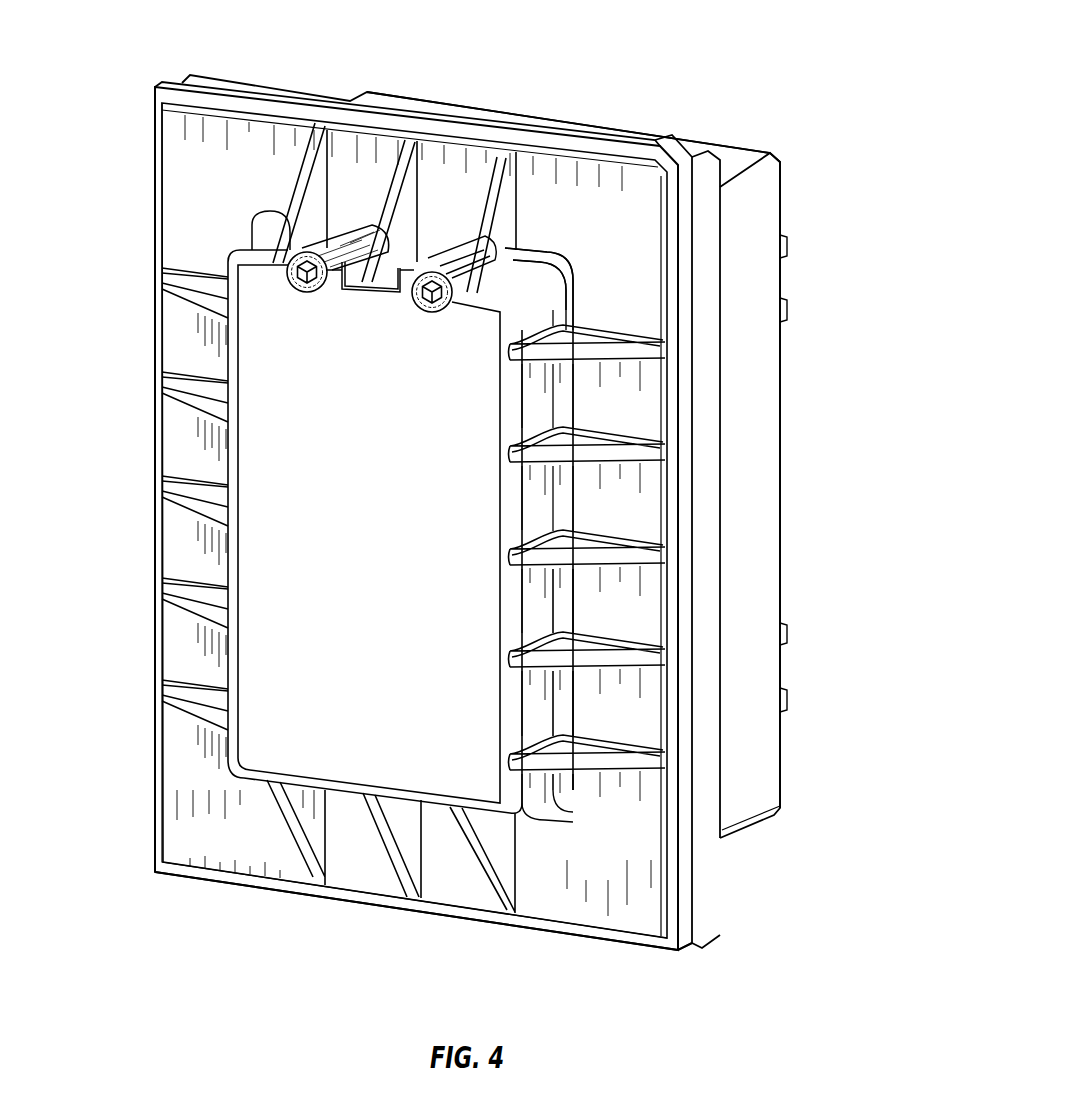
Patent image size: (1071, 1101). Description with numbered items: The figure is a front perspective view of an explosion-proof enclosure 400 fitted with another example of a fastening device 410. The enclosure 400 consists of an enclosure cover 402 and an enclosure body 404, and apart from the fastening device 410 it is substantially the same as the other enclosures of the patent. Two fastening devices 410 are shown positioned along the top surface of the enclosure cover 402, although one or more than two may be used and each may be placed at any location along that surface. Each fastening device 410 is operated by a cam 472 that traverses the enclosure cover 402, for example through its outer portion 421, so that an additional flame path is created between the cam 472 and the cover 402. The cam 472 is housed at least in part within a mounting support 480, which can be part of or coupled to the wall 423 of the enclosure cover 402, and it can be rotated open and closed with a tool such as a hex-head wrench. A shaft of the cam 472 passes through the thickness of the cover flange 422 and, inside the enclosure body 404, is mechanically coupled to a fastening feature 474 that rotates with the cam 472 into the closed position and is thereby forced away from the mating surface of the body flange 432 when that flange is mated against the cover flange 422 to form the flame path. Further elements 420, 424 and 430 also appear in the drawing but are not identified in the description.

The explosion-proof enclosure 400 is at (728, 50).
The enclosure cover 402 is at (152, 550).
The enclosure body 404 is at (785, 407).
The fastening device 410 is at (370, 295).
The window 420 is at (379, 532).
The outer portion 421 is at (246, 836).
The cover flange 422 is at (688, 951).
The wall 423 is at (540, 388).
The rib 424 is at (600, 772).
The gasket frame 430 is at (768, 538).
The body flange 432 is at (710, 880).
The cam 472 is at (303, 288).
The fastening feature 474 is at (288, 254).
The mounting support 480 is at (347, 230).